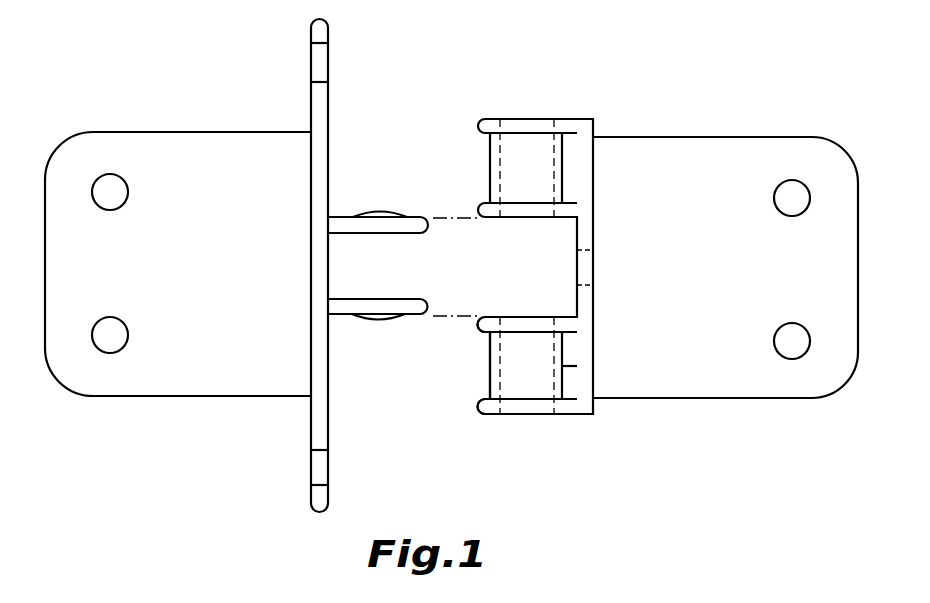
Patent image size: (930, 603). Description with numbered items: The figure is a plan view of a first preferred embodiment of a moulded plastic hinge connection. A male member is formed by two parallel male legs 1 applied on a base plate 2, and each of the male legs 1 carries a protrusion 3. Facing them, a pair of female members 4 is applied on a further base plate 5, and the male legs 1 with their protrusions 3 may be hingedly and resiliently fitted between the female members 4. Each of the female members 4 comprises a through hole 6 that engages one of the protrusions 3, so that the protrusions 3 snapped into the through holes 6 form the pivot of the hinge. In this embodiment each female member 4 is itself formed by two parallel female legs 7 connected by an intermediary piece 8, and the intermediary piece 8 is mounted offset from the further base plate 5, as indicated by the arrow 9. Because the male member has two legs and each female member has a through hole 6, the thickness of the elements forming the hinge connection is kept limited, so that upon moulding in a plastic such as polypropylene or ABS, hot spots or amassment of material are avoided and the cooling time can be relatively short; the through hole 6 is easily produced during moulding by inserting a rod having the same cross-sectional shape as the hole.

The male legs 1 is at (338, 219).
The base plate 2 is at (323, 109).
The protrusion 3 is at (378, 212).
The female members 4 is at (486, 175).
The further base plate 5 is at (585, 238).
The through hole 6 is at (530, 375).
The female legs 7 is at (480, 327).
The intermediary piece 8 is at (495, 362).
The arrow 9 is at (569, 370).